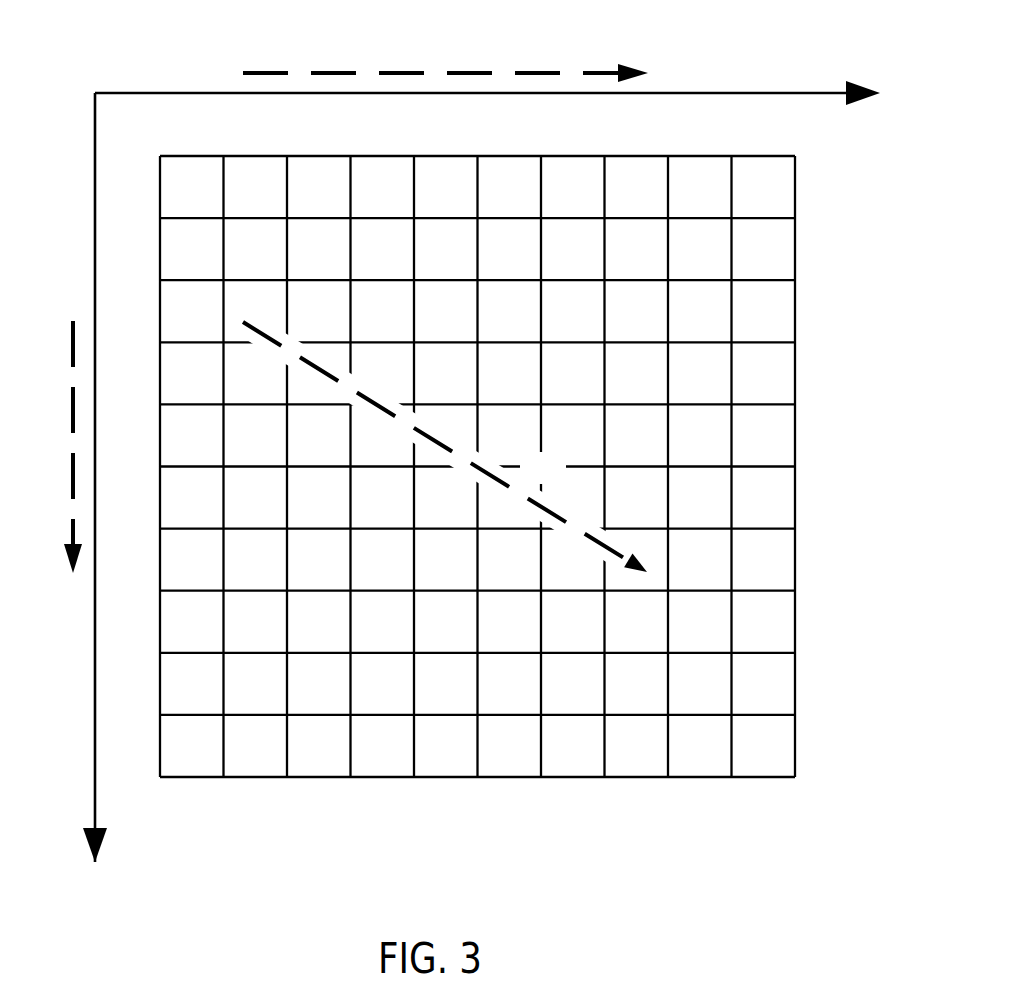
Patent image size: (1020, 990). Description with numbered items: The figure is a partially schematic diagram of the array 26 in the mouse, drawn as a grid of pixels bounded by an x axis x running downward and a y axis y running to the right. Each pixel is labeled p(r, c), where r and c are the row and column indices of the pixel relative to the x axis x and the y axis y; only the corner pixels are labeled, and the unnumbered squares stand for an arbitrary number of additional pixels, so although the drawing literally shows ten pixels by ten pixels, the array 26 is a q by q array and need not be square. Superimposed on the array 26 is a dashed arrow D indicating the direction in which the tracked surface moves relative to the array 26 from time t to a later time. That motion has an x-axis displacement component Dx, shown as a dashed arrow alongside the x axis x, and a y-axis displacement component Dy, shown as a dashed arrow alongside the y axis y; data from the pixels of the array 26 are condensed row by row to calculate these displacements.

The array 26 is at (550, 466).
The direction of motion arrow D is at (444, 446).
The x-axis displacement component Dx is at (50, 447).
The y-axis displacement component Dy is at (445, 51).
The x axis x is at (87, 477).
The y axis y is at (487, 83).